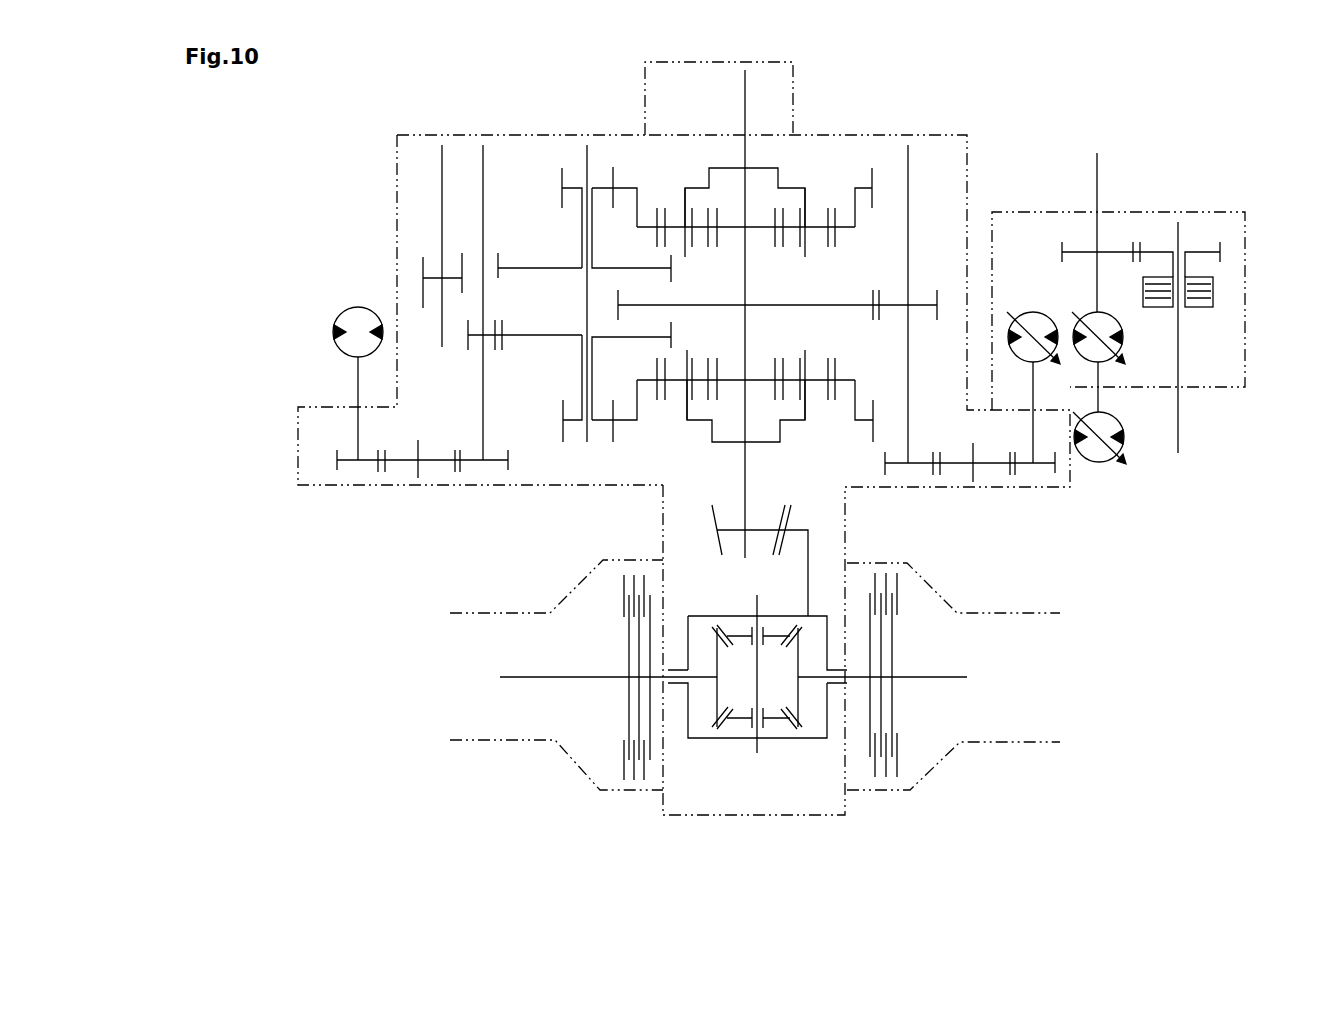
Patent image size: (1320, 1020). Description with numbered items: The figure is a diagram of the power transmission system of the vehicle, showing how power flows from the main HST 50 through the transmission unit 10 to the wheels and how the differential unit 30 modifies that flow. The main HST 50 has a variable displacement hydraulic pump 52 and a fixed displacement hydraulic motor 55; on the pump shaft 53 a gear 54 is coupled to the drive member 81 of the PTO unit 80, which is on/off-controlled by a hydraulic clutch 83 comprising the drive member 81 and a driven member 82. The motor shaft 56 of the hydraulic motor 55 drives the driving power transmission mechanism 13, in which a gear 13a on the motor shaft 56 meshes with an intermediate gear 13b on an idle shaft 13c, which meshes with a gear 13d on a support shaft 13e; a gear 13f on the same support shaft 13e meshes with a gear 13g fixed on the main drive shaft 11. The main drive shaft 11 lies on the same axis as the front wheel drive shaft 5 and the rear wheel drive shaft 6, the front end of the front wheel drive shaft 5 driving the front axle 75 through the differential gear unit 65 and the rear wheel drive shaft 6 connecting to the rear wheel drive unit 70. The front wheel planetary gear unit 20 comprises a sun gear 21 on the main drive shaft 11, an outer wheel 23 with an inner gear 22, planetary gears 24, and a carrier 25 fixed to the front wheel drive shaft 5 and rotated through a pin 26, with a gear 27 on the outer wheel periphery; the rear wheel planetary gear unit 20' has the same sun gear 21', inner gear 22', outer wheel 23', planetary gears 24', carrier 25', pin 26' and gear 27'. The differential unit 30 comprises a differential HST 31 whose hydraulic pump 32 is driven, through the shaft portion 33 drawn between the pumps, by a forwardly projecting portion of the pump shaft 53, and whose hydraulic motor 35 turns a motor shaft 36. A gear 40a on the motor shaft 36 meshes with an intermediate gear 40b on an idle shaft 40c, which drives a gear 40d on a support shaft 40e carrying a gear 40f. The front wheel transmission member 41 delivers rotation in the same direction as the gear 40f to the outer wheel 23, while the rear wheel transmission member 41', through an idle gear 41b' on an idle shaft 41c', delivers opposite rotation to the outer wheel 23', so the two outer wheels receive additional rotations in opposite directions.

The front wheel drive shaft 5 is at (750, 492).
The rear wheel drive shaft 6 is at (743, 148).
The transmission unit 10 is at (1057, 103).
The main drive shaft 11 is at (748, 285).
The driving power transmission mechanism 13 is at (928, 480).
The gear 13a is at (1022, 470).
The intermediate gear 13b is at (992, 468).
The idle shaft 13c is at (972, 478).
The gear 13d is at (922, 465).
The support shaft 13e is at (908, 167).
The gear 13f is at (918, 303).
The gear 13g is at (858, 303).
The front wheel planetary gear unit 20 is at (723, 445).
The rear wheel planetary gear unit 20' is at (750, 161).
The sun gear 21 is at (782, 416).
The sun gear 21' is at (789, 197).
The inner gear 22 is at (844, 443).
The inner gear 22' is at (866, 182).
The outer wheel 23 is at (868, 453).
The outer wheel 23' is at (887, 155).
The planetary gears 24 is at (812, 420).
The planetary gears 24' is at (827, 192).
The carrier 25 is at (746, 431).
The carrier 25' is at (745, 182).
The pin 26 is at (678, 416).
The pin 26' is at (670, 197).
The gear 27 is at (617, 402).
The gear 27' is at (616, 290).
The differential unit 30 is at (251, 317).
The differential HST 31 is at (236, 225).
The hydraulic pump 32 is at (1118, 467).
The pump shaft 33 is at (1100, 400).
The hydraulic motor 35 is at (337, 308).
The motor shaft 36 is at (356, 383).
The gear 40a is at (345, 470).
The intermediate gear 40b is at (398, 465).
The idle shaft 40c is at (423, 478).
The gear 40d is at (470, 470).
The support shaft 40e is at (483, 392).
The gear 40f is at (468, 320).
The front wheel transmission member 41 is at (525, 439).
The rear wheel transmission member 41' is at (540, 176).
The idle gear 41b' is at (399, 191).
The idle shaft 41c' is at (423, 210).
The main HST 50 is at (1000, 180).
The hydraulic pump 52 is at (1060, 301).
The pump shaft 53 is at (1098, 200).
The gear 54 is at (1117, 252).
The hydraulic motor 55 is at (1016, 301).
The motor shaft 56 is at (1035, 425).
The differential gear unit 65 is at (786, 752).
The rear wheel drive unit 70 is at (675, 58).
The front axle 75 is at (537, 675).
The PTO unit 80 is at (1195, 337).
The drive member 81 is at (1222, 252).
The driven member 82 is at (1213, 305).
The hydraulic clutch 83 is at (1290, 240).